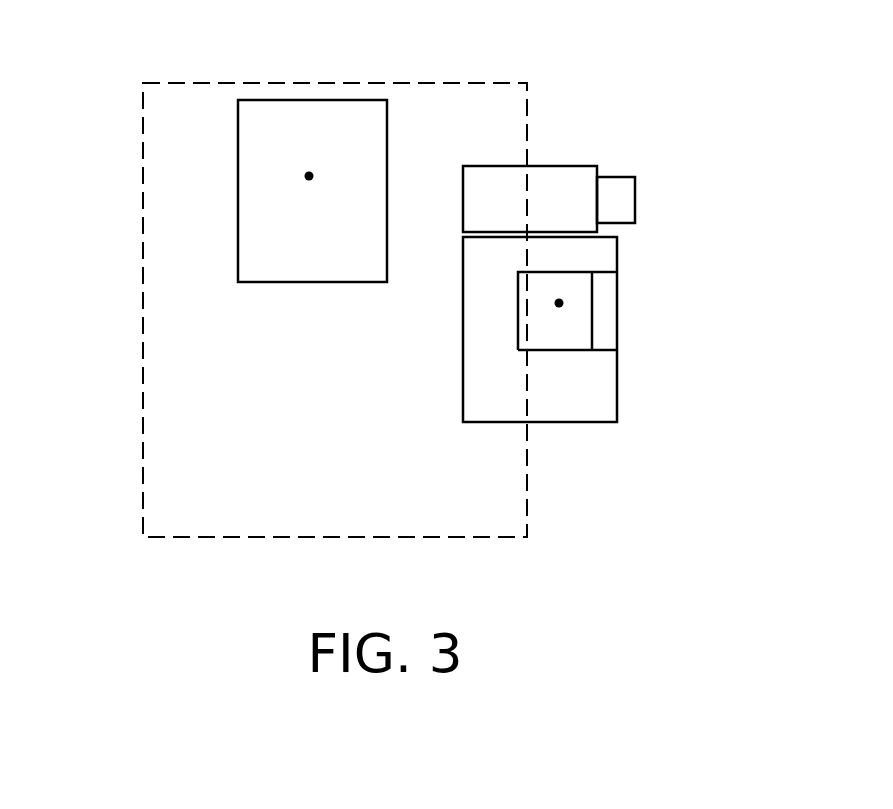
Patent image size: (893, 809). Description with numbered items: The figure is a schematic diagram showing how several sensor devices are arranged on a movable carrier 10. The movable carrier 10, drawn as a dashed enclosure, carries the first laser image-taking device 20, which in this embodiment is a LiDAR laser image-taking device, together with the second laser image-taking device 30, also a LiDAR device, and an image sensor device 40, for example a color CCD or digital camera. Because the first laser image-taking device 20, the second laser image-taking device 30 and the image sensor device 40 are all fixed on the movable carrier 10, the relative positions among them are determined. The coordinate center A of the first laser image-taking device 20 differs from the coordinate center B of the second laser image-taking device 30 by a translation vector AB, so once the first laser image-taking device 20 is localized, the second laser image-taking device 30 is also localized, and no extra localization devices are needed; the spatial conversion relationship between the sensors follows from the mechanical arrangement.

The movable carrier 10 is at (469, 83).
The first laser image-taking device 20 is at (250, 142).
The second laser image-taking device 30 is at (585, 393).
The image sensor device 40 is at (555, 180).